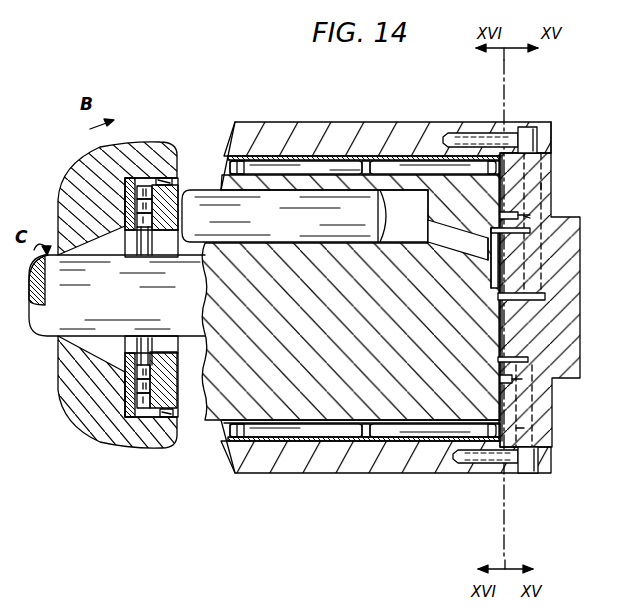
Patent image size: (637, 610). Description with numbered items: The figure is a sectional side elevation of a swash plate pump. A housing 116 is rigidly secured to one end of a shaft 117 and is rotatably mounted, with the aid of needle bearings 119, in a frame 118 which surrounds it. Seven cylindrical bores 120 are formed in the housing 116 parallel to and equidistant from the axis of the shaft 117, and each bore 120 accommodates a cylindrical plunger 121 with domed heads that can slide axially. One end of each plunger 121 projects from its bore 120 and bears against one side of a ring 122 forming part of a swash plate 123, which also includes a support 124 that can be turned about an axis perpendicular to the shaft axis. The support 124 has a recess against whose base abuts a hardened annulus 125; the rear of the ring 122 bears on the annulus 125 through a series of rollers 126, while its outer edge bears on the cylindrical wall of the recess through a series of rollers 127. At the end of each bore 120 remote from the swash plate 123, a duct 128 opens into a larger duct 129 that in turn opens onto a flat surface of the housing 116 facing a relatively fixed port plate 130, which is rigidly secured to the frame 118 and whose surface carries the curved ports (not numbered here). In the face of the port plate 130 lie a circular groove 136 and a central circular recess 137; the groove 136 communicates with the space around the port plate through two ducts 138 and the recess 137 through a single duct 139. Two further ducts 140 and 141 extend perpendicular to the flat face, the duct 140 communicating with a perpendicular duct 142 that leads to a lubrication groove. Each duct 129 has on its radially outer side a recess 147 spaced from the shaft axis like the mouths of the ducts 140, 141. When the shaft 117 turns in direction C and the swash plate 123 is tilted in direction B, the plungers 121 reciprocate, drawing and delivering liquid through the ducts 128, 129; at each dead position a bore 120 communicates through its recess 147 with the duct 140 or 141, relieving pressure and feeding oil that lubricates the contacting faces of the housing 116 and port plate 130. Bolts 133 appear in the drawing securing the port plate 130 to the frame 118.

The housing 116 is at (226, 432).
The shaft 117 is at (33, 337).
The frame 118 is at (316, 122).
The needle bearings 119 is at (326, 455).
The bore 120 is at (390, 243).
The plunger 121 is at (206, 181).
The ring 122 is at (174, 414).
The swash plate 123 is at (104, 450).
The support 124 is at (107, 316).
The hardened annulus 125 is at (142, 187).
The rollers 126 is at (150, 389).
The rollers 127 is at (165, 178).
The duct 128 is at (446, 241).
The duct 129 is at (489, 262).
The port plate 130 is at (612, 379).
The bolt 133 is at (530, 133).
The circular groove 136 is at (504, 211).
The circular recess 137 is at (492, 318).
The ducts 138 is at (524, 429).
The duct 139 is at (541, 184).
The duct 140 is at (508, 234).
The duct 141 is at (520, 357).
The duct 142 is at (532, 218).
The recess 147 is at (491, 229).